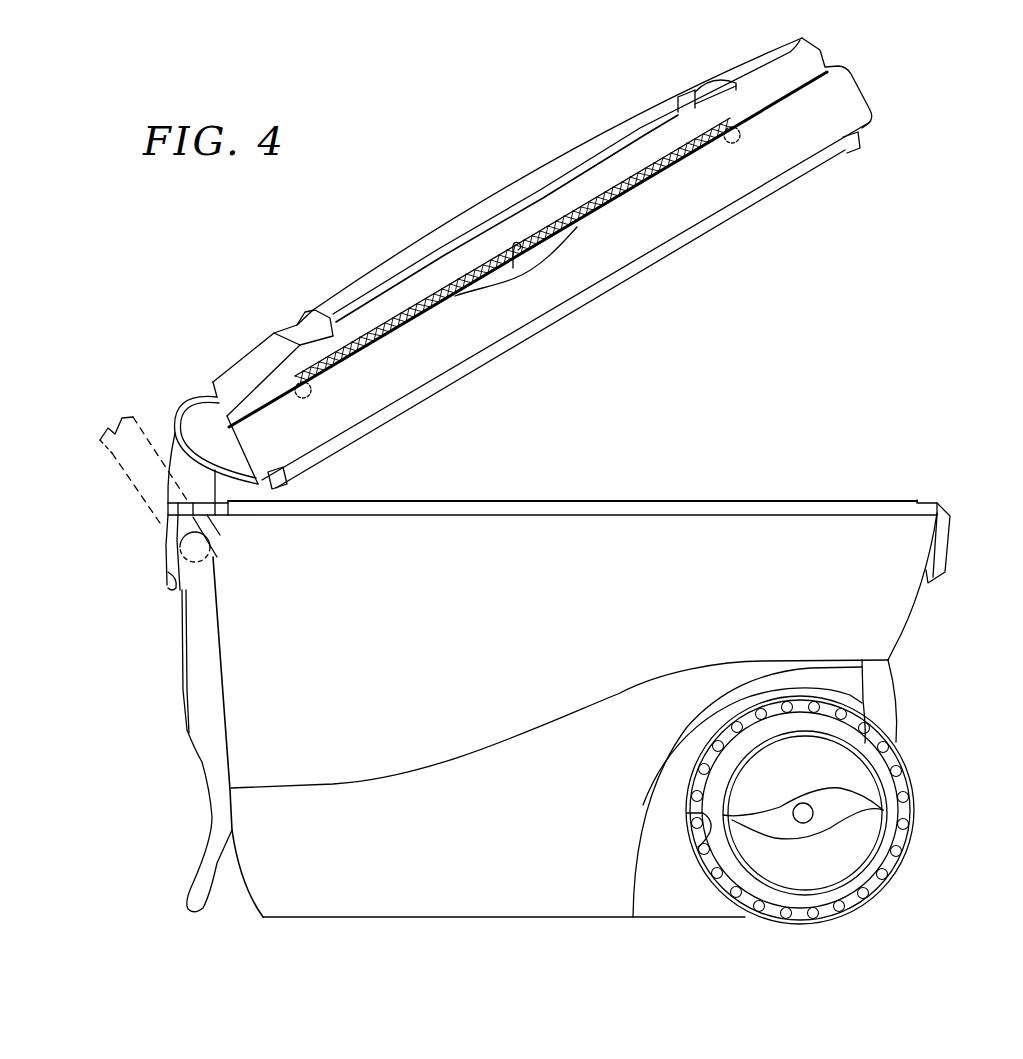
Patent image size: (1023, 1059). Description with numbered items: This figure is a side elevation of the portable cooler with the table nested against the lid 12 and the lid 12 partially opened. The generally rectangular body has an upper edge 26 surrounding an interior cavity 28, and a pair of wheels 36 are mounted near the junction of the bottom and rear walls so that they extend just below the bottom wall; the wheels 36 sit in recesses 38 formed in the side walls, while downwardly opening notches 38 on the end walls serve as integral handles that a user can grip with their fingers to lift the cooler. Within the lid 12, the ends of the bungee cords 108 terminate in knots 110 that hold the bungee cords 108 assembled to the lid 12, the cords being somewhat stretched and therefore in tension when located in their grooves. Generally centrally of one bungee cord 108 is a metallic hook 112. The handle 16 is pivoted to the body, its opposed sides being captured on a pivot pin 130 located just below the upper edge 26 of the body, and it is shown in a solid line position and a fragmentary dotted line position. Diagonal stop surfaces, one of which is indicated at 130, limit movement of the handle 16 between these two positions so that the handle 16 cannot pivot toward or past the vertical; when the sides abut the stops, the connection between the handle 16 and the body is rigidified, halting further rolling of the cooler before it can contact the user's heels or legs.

The lid 12 is at (866, 88).
The handle 16 is at (127, 481).
The upper edge 26 is at (678, 500).
The interior cavity 28 is at (517, 644).
The wheels 36 is at (917, 795).
The recesses / notches 38 is at (170, 590).
The bungee cords 108 is at (654, 183).
The knots 110 is at (310, 404).
The metallic hook 112 is at (510, 250).
The pivot pin / stop surface 130 is at (228, 532).